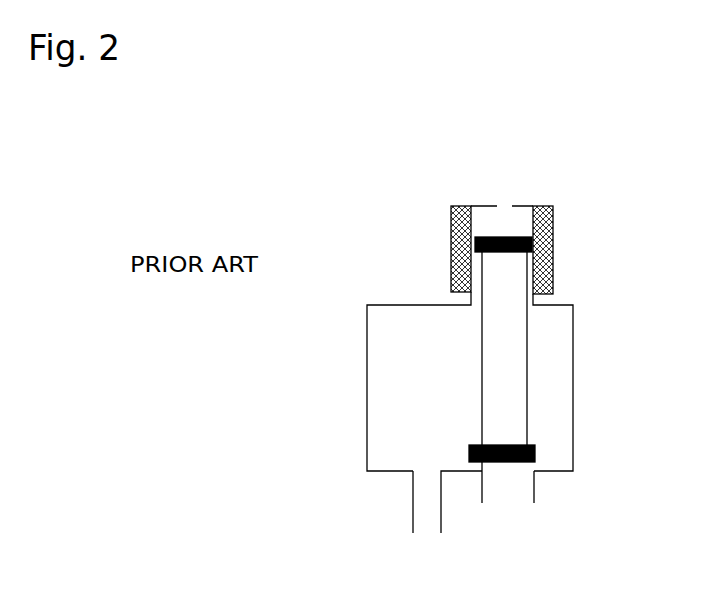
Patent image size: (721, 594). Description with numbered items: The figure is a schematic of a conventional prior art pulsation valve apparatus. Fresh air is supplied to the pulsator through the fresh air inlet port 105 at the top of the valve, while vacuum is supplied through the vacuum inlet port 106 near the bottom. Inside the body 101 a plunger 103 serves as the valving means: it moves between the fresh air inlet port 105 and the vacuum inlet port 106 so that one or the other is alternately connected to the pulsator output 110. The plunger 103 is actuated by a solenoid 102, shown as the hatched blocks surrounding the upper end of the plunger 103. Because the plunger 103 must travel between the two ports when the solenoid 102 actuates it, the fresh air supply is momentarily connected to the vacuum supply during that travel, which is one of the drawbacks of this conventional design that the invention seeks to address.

The housing body 101 is at (355, 280).
The solenoid 102 is at (552, 238).
The plunger 103 is at (510, 353).
The fresh air inlet port 105 is at (512, 205).
The vacuum inlet port 106 is at (517, 493).
The pulsator output 110 is at (425, 513).